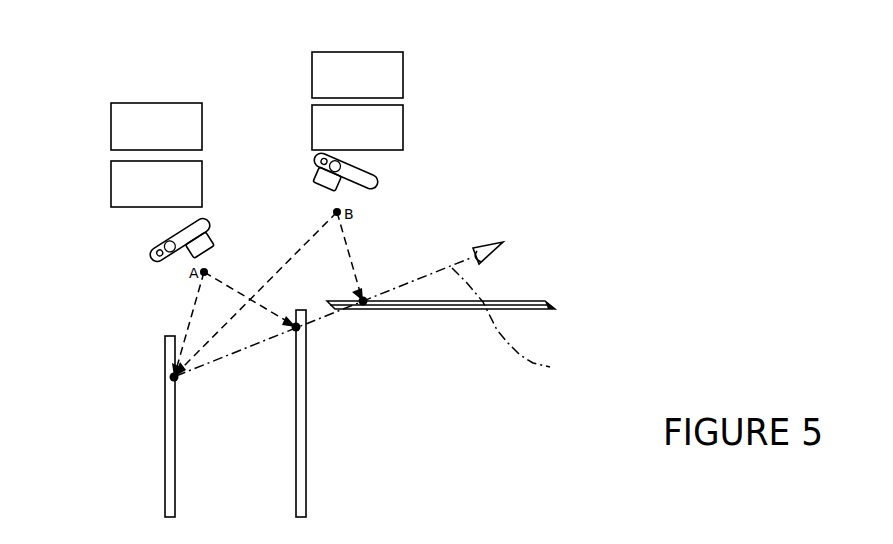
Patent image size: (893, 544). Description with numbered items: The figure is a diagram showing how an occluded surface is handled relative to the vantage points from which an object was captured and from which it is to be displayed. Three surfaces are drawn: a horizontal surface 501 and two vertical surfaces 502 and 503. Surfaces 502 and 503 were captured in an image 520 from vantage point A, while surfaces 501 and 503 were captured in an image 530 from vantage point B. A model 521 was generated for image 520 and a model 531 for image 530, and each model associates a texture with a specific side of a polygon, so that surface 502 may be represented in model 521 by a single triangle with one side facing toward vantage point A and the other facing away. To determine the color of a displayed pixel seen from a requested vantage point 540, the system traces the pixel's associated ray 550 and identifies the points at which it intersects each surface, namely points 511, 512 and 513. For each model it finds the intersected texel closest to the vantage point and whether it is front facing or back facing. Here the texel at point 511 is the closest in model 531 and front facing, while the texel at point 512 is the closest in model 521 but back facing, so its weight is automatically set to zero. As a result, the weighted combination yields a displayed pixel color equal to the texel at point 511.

The surface 501 is at (552, 309).
The surface 502 is at (296, 462).
The surface 503 is at (175, 500).
The intersection point 511 is at (368, 306).
The intersection point 512 is at (302, 331).
The intersection point 513 is at (170, 377).
The image 520 is at (111, 186).
The model 521 is at (111, 128).
The image 530 is at (403, 128).
The model 531 is at (403, 75).
The vantage point 540 is at (503, 243).
The ray 550 is at (523, 323).